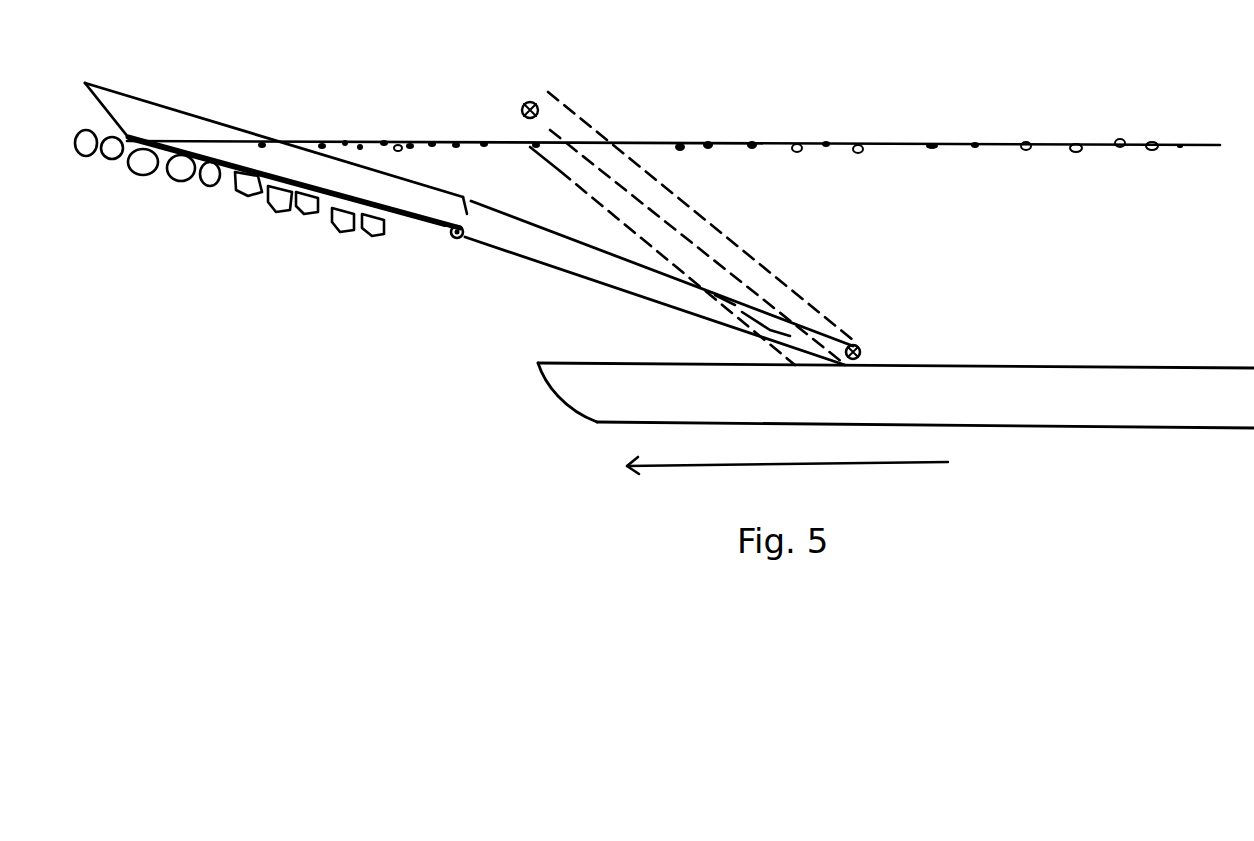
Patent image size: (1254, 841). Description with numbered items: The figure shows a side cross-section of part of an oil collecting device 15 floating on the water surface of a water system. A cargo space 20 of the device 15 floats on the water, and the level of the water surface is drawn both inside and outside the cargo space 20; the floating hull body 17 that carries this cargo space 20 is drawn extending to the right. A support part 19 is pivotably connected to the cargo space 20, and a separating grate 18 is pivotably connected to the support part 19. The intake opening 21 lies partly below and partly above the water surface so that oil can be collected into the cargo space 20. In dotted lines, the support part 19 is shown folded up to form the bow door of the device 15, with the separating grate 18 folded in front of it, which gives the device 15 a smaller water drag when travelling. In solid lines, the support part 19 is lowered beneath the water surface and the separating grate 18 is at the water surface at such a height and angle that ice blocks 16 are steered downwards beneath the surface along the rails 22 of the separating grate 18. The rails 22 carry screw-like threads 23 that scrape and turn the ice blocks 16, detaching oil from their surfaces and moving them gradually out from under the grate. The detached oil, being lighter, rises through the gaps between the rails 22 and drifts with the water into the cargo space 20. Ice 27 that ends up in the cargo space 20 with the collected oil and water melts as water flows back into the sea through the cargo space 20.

The device 15 is at (468, 352).
The ice blocks 16 is at (177, 183).
The vessel 17 is at (1007, 363).
The separating grate 18 is at (148, 98).
The support part 19 is at (737, 244).
The cargo space 20 is at (956, 108).
The intake opening 21 is at (618, 132).
The rails 22 is at (228, 170).
The screw-like threads 23 is at (325, 210).
The ice 27 is at (800, 143).